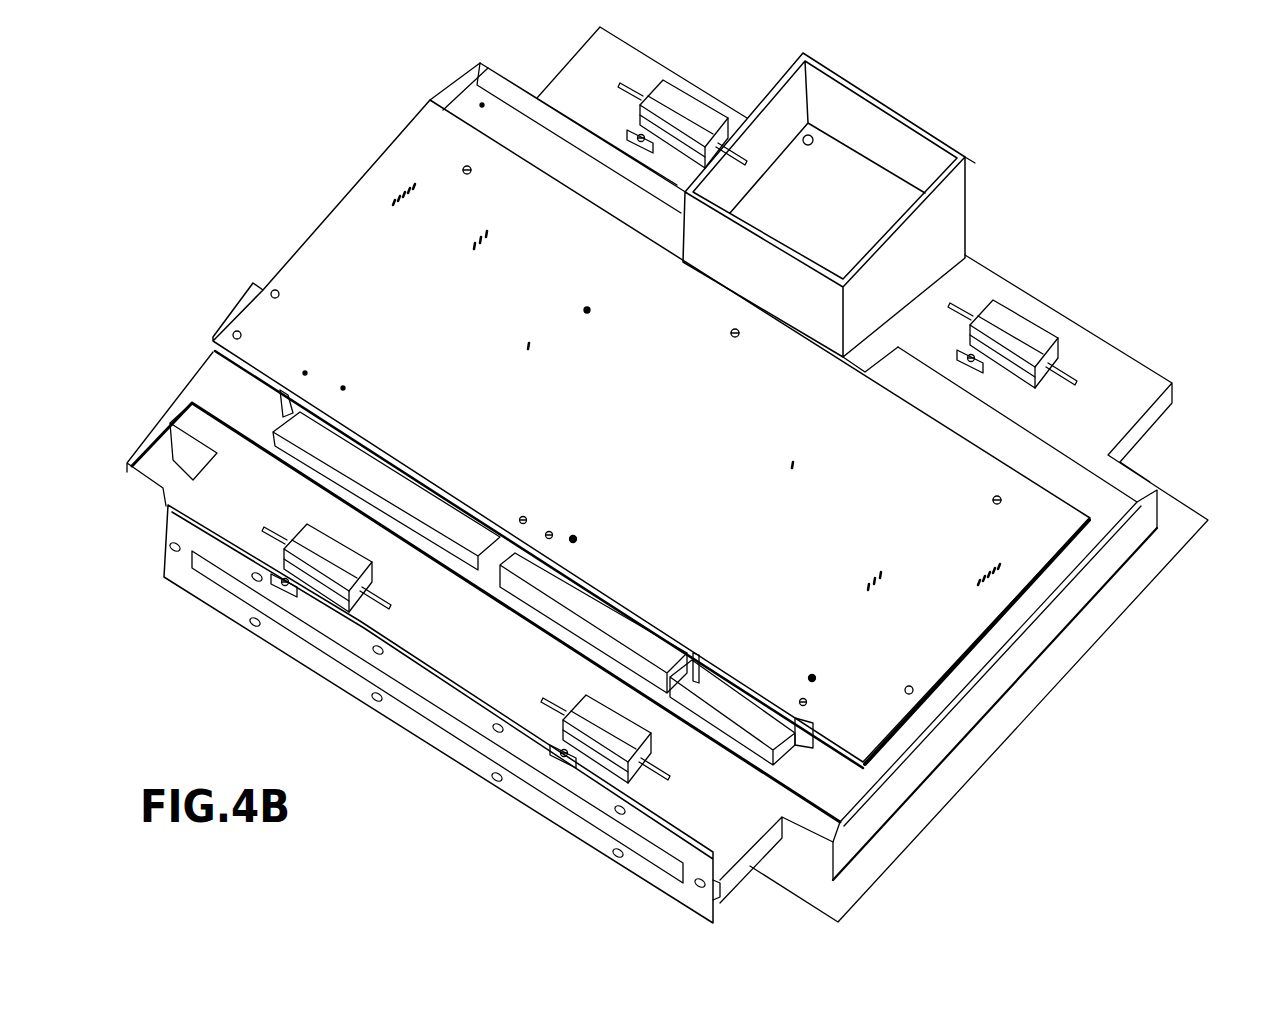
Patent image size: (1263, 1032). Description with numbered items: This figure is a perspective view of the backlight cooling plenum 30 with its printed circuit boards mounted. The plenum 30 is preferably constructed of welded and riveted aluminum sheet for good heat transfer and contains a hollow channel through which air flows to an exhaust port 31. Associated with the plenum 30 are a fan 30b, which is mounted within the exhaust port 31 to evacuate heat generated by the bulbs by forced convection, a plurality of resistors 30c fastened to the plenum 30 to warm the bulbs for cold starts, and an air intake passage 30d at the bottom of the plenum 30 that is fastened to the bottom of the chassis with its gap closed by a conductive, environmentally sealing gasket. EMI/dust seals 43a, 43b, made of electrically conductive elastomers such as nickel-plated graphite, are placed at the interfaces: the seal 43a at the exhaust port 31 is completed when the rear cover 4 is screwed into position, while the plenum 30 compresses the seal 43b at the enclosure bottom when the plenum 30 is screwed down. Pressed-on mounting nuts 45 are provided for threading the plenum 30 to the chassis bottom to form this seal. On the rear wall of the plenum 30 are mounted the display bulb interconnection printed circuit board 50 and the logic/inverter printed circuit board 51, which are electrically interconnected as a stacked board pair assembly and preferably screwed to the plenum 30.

The rear cover 4 is at (1153, 388).
The plenum 30 is at (170, 570).
The fan 30b is at (845, 168).
The resistors 30c is at (1020, 335).
The air intake passage 30d is at (467, 728).
The exhaust port 31 is at (777, 80).
The EMI/dust seal 43a is at (967, 155).
The EMI/dust seal 43b is at (708, 912).
The pressed-on mounting nuts 45 is at (614, 853).
The display bulb interconnection printed circuit board 50 is at (850, 785).
The logic/inverter printed circuit board 51 is at (973, 622).